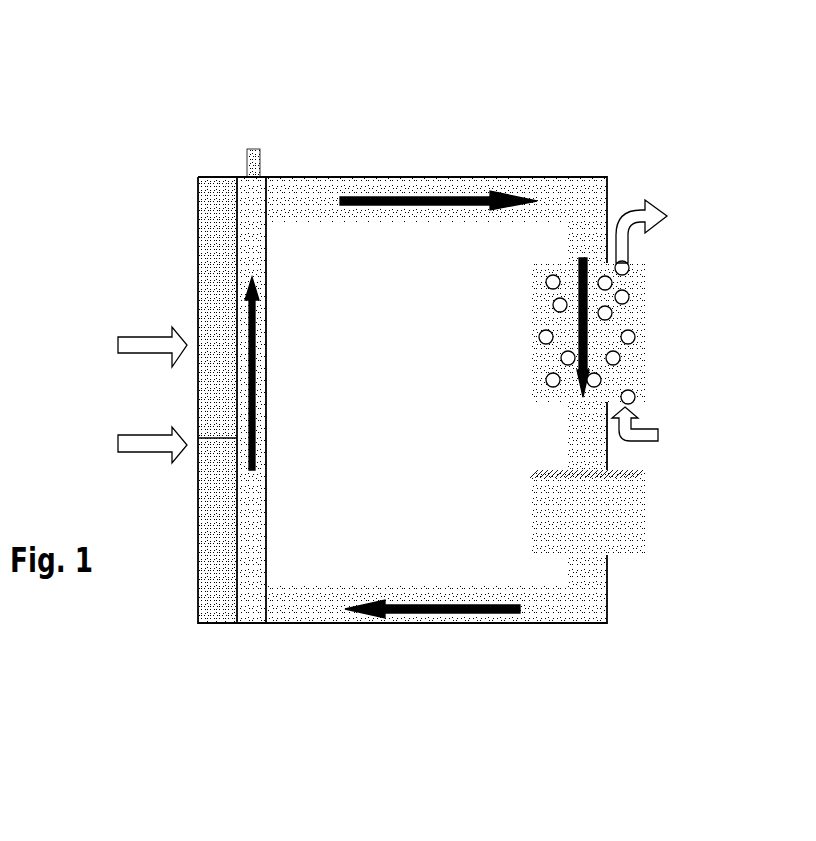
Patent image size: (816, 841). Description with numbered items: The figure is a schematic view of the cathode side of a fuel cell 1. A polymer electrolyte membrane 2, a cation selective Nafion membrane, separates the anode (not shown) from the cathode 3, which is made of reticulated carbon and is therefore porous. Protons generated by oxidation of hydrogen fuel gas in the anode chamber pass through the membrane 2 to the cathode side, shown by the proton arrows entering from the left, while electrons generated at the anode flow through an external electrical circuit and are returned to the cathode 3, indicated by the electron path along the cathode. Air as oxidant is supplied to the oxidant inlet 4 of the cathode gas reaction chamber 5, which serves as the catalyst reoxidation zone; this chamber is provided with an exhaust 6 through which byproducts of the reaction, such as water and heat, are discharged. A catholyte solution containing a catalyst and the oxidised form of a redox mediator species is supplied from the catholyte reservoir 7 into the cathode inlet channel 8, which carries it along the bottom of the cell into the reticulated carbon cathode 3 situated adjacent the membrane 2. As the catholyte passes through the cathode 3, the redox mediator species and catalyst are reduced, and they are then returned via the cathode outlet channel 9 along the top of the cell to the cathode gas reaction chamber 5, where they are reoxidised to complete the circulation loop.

The fuel cell 1 is at (619, 107).
The polymer electrolyte membrane 2 is at (218, 563).
The cathode 3 is at (260, 603).
The oxidant inlet 4 is at (654, 432).
The cathode gas reaction chamber 5 is at (626, 320).
The exhaust 6 is at (660, 231).
The catholyte reservoir 7 is at (613, 499).
The cathode inlet channel 8 is at (520, 624).
The cathode outlet channel 9 is at (408, 203).